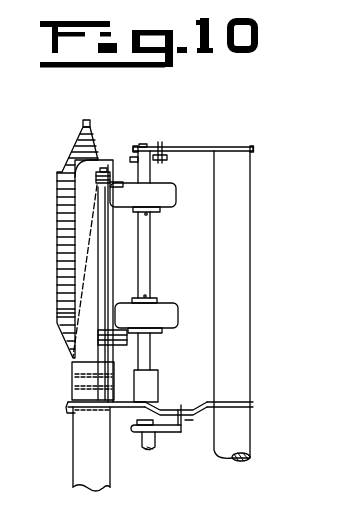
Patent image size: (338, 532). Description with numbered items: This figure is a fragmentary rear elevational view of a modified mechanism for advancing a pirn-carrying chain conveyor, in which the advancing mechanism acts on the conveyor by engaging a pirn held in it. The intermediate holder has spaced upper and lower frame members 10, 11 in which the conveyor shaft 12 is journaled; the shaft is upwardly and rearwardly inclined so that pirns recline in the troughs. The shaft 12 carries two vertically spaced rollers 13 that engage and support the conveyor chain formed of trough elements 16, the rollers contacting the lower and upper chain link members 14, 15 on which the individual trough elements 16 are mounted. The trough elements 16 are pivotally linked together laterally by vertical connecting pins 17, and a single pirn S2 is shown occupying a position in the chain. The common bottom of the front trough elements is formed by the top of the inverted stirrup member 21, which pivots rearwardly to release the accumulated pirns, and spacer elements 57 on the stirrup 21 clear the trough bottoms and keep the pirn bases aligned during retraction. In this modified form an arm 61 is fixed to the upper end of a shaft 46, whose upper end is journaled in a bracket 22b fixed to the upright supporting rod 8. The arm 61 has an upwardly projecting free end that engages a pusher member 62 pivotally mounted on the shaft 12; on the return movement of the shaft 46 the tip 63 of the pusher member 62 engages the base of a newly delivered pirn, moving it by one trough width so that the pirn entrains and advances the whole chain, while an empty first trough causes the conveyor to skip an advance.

The upper frame member 10 is at (202, 148).
The upright supporting rod 8 is at (245, 307).
The shaft 12 is at (150, 248).
The rollers 13 is at (176, 198).
The upper chain link member 15 is at (97, 172).
The trough elements 16 is at (58, 233).
The vertical connecting pins 17 is at (103, 268).
The pirn S2 is at (60, 313).
The lower chain link member 14 is at (98, 338).
The tip 63 is at (67, 403).
The spacer elements 57 is at (63, 408).
The pusher member 62 is at (110, 413).
The inverted stirrup member 21 is at (76, 466).
The lower frame member 11 is at (198, 405).
The arm 61 is at (167, 434).
The shaft 46 is at (148, 449).
The upper bracket 22b is at (193, 426).